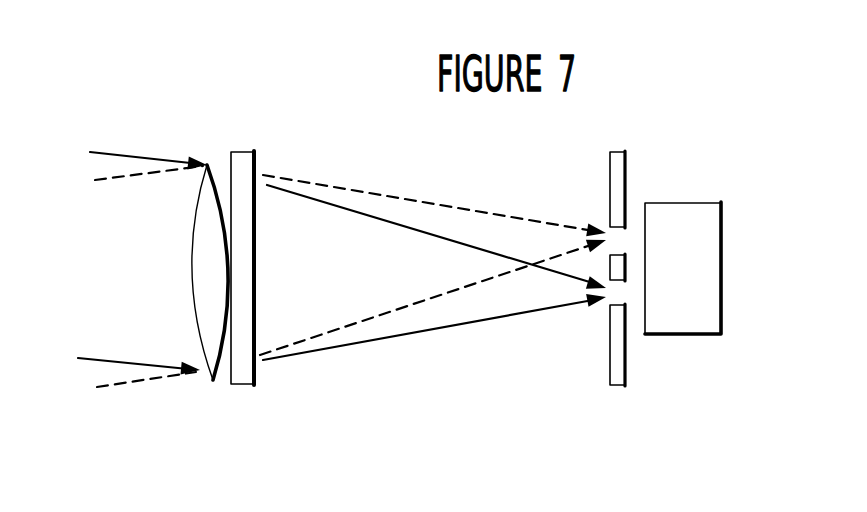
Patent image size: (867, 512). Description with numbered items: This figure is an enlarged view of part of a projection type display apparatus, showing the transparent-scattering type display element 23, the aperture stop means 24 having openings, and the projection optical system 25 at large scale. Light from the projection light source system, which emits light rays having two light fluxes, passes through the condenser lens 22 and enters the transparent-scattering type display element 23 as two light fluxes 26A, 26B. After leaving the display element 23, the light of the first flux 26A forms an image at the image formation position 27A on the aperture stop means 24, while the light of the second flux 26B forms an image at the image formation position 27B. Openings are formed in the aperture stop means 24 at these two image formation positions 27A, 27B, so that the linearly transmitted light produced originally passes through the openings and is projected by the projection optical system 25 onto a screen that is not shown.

The condenser lens 22 is at (207, 163).
The transparent-scattering type display element 23 is at (257, 152).
The aperture stop means 24 is at (612, 152).
The projection optical system 25 is at (680, 218).
The light flux 26A is at (112, 152).
The light flux 26B is at (107, 178).
The image formation position 27A is at (607, 307).
The image formation position 27B is at (607, 227).